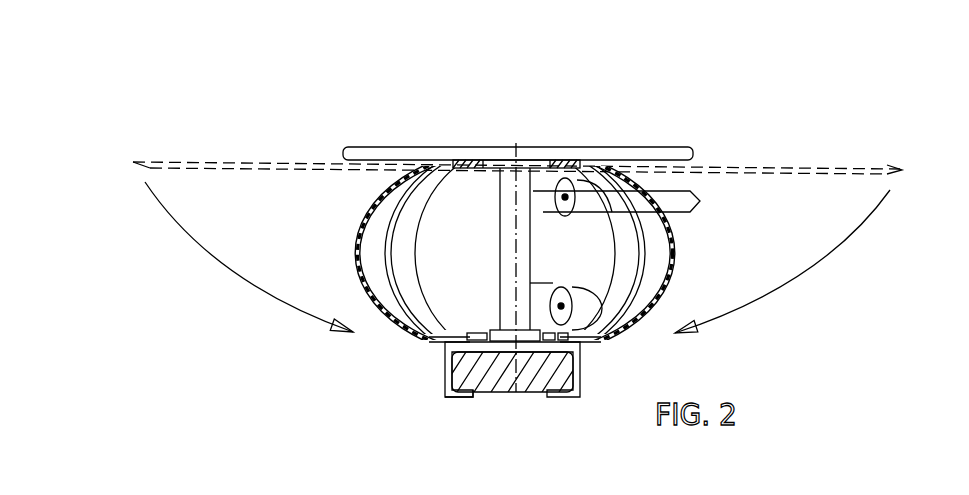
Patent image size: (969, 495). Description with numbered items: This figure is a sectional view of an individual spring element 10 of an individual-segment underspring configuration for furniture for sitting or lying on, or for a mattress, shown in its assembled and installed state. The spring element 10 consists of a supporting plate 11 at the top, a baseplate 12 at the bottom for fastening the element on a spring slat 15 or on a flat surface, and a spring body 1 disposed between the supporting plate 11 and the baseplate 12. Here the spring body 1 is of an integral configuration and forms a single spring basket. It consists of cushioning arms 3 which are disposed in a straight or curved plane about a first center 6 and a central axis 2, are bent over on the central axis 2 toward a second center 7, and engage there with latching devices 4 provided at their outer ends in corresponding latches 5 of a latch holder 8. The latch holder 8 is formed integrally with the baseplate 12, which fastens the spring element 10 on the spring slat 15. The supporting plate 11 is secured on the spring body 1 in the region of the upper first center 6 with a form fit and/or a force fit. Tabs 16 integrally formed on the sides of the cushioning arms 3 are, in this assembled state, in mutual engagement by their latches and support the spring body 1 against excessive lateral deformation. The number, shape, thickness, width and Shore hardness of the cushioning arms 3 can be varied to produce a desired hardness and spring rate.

The spring body 1 is at (343, 238).
The central axis 2 is at (632, 182).
The cushioning arms 3 is at (357, 267).
The latching devices 4 is at (465, 333).
The latches 5 is at (445, 361).
The first center 6 is at (467, 162).
The second center 7 is at (492, 325).
The latch holder 8 is at (450, 375).
The individual spring element 10 is at (517, 146).
The supporting plate 11 is at (493, 152).
The baseplate 12 is at (470, 393).
The spring slat 15 is at (520, 380).
The tabs 16 is at (703, 201).